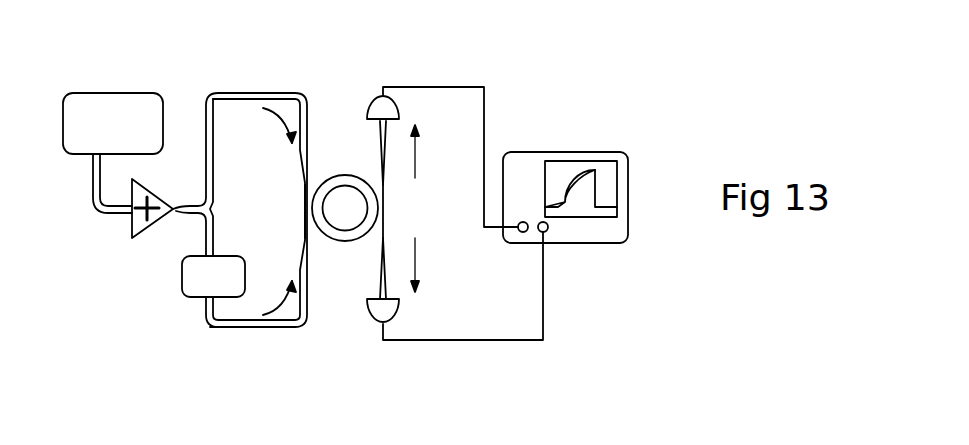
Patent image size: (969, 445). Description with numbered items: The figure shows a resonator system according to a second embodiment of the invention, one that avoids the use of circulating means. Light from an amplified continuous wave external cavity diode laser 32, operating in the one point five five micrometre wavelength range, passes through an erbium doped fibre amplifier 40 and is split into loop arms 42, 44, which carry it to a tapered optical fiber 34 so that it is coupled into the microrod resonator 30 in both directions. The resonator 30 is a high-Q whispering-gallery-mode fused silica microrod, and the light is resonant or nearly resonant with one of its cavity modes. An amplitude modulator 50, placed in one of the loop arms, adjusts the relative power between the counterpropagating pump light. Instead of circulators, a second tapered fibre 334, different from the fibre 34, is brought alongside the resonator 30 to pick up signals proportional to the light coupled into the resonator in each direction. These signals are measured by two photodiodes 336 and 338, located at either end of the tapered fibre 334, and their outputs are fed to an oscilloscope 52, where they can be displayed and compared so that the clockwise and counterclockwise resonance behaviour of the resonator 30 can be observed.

The amplified continuous wave external cavity diode laser 32 is at (90, 106).
The erbium doped fibre amplifier 40 is at (141, 228).
The loop arm 42 is at (231, 97).
The loop arm 44 is at (210, 326).
The tapered optical fiber 34 is at (302, 212).
The amplitude modulator 50 is at (214, 268).
The microrod resonator 30 is at (343, 227).
The tapered fibre 334 is at (385, 205).
The photodiode 336 is at (378, 108).
The photodiode 338 is at (378, 312).
The oscilloscope 52 is at (575, 230).